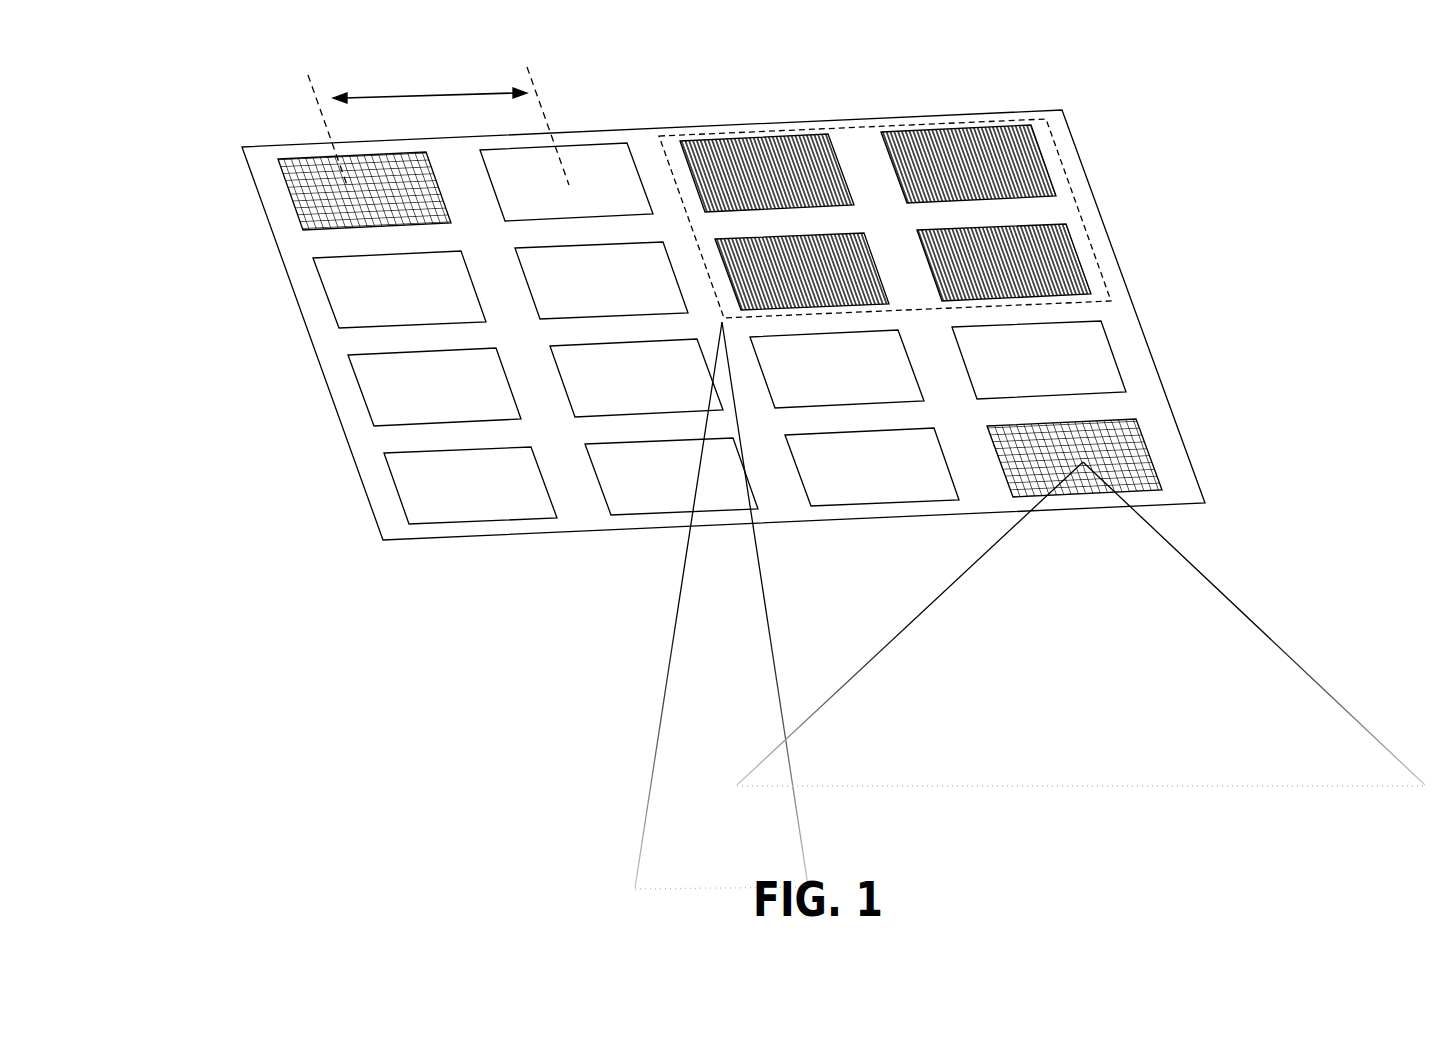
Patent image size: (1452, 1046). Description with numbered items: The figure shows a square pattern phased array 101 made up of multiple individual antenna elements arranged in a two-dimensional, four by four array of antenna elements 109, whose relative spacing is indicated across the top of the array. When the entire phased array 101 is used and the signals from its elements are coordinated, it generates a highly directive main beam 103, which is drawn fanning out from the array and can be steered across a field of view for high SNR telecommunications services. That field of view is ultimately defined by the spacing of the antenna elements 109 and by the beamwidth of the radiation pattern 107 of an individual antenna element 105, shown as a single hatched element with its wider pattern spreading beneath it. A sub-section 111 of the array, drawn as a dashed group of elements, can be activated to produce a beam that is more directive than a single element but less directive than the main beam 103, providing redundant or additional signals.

The square pattern phased array 101 is at (1138, 293).
The directive beam 103 is at (680, 598).
The individual antenna element 105 is at (1148, 445).
The radiation pattern 107 is at (1285, 637).
The antenna elements 109 is at (418, 91).
The sub-section of the array 111 is at (1073, 183).